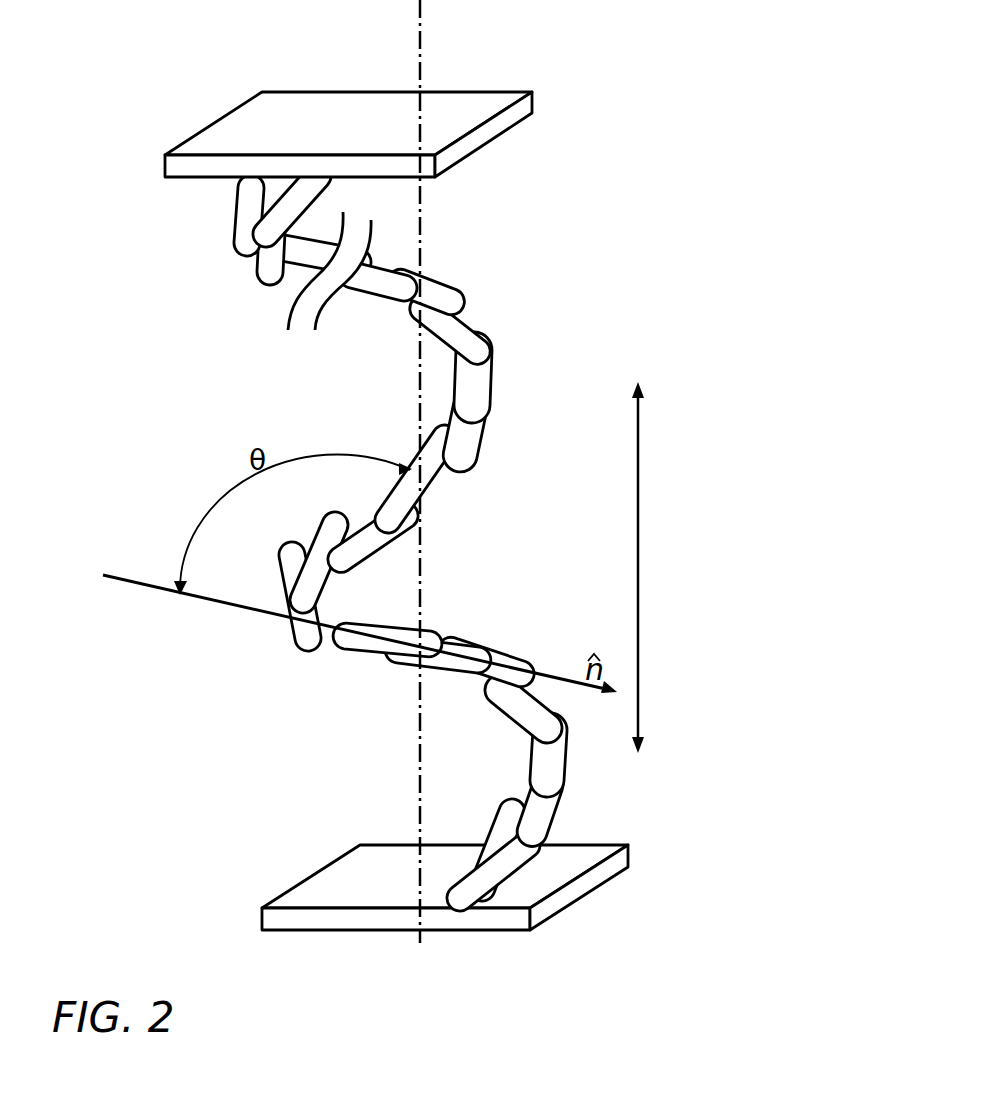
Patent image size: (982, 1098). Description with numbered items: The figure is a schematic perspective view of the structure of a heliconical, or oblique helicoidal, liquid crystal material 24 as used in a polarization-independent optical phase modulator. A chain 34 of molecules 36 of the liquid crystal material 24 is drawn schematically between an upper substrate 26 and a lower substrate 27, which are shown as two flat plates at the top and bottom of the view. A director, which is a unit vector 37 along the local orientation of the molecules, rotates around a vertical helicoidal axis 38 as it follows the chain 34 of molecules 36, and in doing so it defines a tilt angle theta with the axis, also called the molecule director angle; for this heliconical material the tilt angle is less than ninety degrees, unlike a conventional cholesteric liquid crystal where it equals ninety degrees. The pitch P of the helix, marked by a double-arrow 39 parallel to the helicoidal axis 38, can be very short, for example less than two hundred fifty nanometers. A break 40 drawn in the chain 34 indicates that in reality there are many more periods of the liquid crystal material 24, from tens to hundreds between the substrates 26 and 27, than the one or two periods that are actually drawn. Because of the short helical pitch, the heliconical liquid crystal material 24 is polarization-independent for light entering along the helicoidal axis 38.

The heliconical liquid crystal material 24 is at (528, 537).
The substrate 26 is at (532, 97).
The substrate 27 is at (573, 902).
The chain 34 is at (348, 657).
The molecules 36 is at (460, 300).
The unit vector 37 is at (467, 632).
The helicoidal axis 38 is at (418, 40).
The double-arrow 39 is at (638, 460).
The break 40 is at (272, 333).